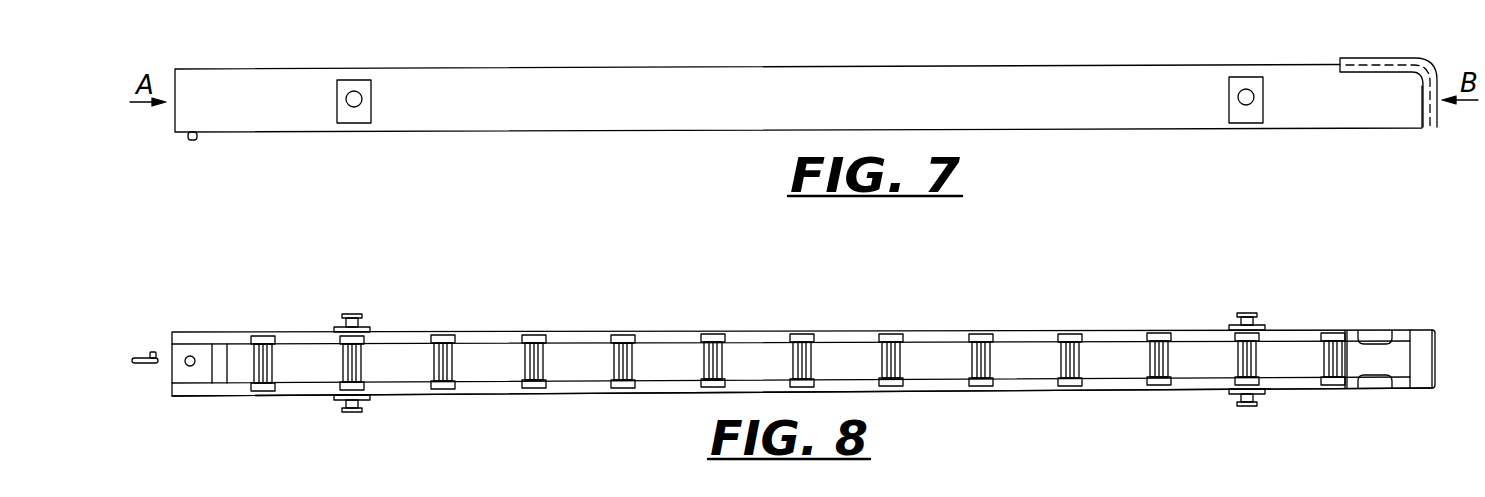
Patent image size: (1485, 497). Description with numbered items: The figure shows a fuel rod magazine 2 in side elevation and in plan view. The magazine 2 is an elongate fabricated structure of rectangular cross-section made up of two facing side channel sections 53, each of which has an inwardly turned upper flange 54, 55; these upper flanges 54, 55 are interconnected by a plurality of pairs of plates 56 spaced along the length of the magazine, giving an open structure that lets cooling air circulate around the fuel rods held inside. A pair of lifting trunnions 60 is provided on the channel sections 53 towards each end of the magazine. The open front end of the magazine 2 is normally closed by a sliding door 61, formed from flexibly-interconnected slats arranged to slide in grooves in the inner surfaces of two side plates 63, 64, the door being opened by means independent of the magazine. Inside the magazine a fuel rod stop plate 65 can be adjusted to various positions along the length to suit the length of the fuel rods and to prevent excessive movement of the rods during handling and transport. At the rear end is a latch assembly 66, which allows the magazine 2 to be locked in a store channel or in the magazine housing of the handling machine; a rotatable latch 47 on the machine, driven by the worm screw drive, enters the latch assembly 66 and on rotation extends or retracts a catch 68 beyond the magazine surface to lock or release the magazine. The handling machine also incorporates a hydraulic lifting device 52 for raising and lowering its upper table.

In FIG. 7, the magazine 2 is at (826, 56).
In FIG. 8, the rotatable latch 47 is at (143, 357).
In FIG. 8, the hydraulic lifting device 52 is at (1012, 337).
In FIG. 8, the side channel section 53 is at (1025, 397).
In FIG. 8, the inwardly turned upper flange 54 is at (923, 385).
In FIG. 8, the inwardly turned upper flange 55 is at (838, 333).
In FIG. 8, the plates 56 is at (530, 352).
In FIG. 7, the lifting trunnions 60 is at (354, 107).
In FIG. 8, the lifting trunnions 60 is at (355, 314).
In FIG. 7, the sliding door 61 is at (1420, 58).
In FIG. 8, the sliding door 61 is at (1422, 372).
In FIG. 8, the side plate 63 is at (1372, 390).
In FIG. 8, the side plate 64 is at (1366, 331).
In FIG. 8, the fuel rod stop plate 65 is at (232, 344).
In FIG. 8, the latch assembly 66 is at (197, 382).
In FIG. 7, the catch 68 is at (192, 141).